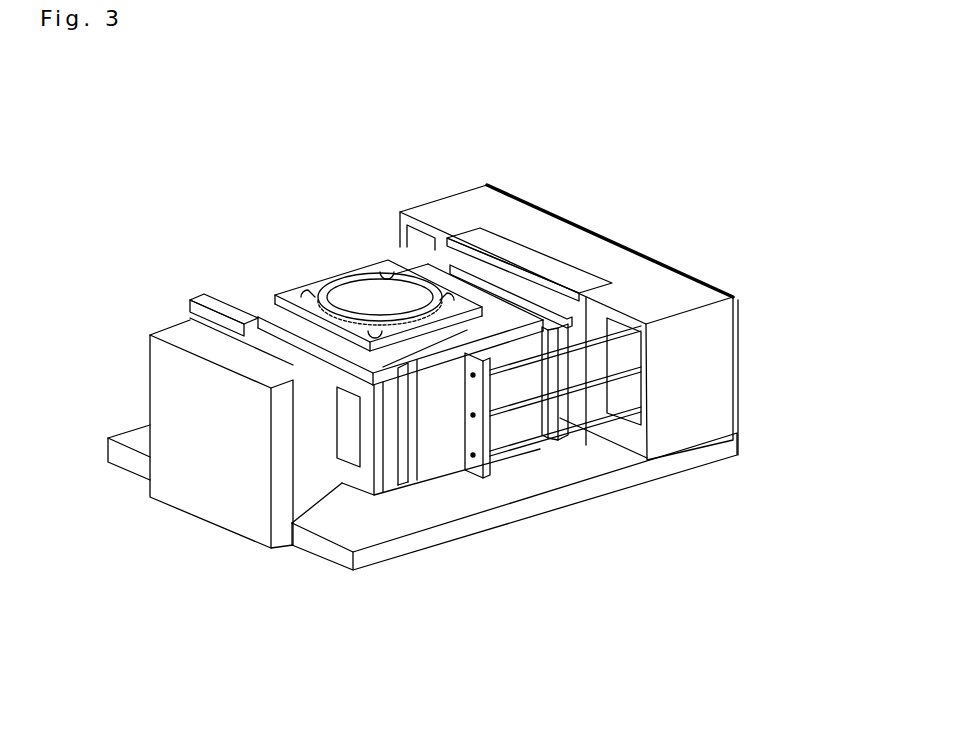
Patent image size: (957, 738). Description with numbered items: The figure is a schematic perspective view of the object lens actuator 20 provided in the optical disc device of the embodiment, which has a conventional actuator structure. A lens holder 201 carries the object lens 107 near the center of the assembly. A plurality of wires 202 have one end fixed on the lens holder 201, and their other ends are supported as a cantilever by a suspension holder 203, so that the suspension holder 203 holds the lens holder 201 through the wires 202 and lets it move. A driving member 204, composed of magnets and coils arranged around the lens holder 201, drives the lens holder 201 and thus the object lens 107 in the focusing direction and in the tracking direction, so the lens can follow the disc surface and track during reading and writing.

The object lens actuator 20 is at (163, 150).
The object lens 107 is at (367, 288).
The lens holder 201 is at (263, 303).
The wires 202 is at (518, 356).
The suspension holder 203 is at (583, 243).
The driving member 204 is at (742, 235).